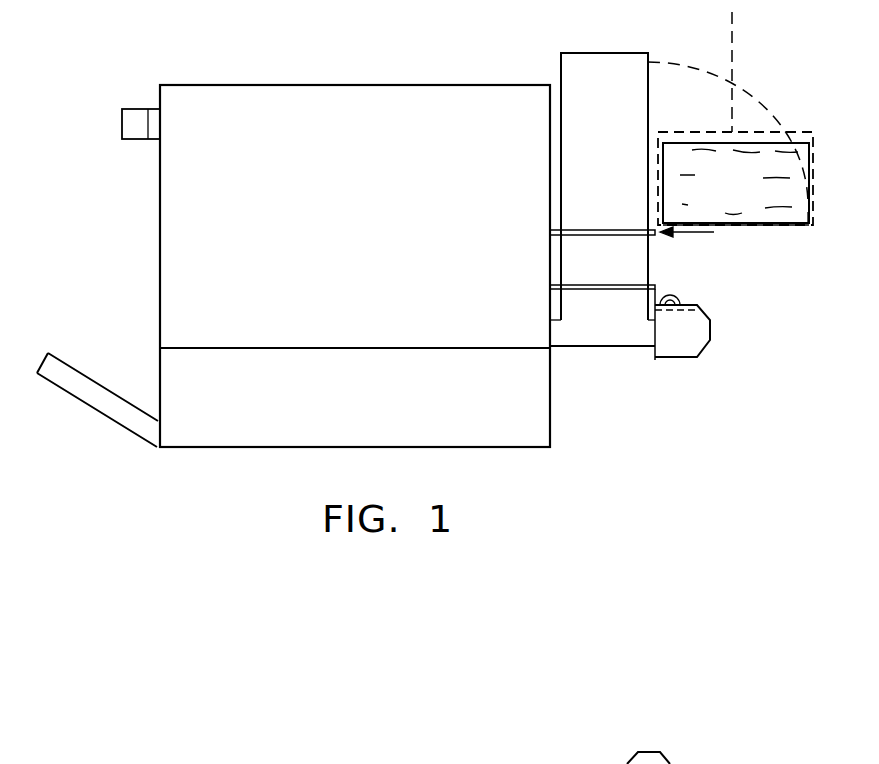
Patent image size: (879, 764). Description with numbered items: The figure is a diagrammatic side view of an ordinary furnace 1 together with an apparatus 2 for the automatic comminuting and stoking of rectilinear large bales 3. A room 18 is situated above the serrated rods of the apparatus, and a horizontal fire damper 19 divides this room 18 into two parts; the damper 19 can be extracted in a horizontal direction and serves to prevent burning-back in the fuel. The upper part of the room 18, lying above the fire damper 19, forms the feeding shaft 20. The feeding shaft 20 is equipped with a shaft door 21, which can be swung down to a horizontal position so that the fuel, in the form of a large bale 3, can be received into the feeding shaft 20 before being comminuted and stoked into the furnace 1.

The furnace 1 is at (173, 253).
The apparatus for automatic comminuting and stoking 2 is at (648, 270).
The rectilinear large bale 3 is at (747, 188).
The room 18 is at (577, 55).
The horizontal fire damper 19 is at (655, 234).
The feeding shaft 20 is at (633, 85).
The shaft door 21 is at (787, 228).